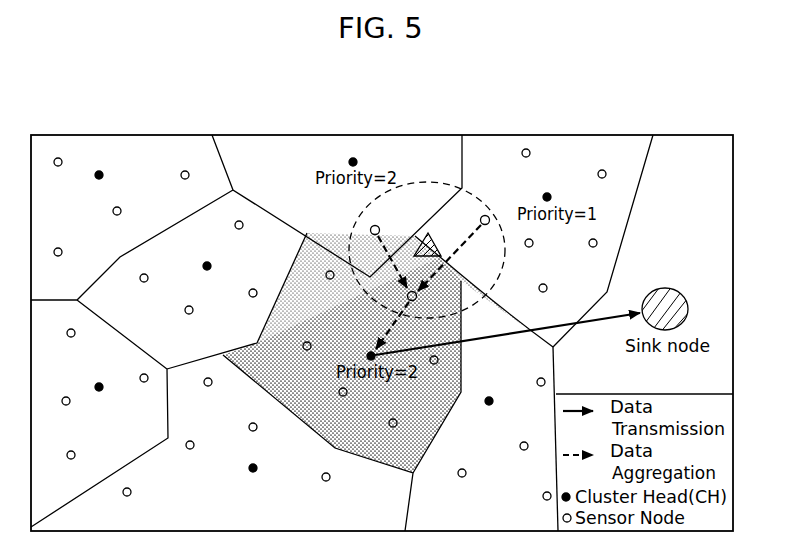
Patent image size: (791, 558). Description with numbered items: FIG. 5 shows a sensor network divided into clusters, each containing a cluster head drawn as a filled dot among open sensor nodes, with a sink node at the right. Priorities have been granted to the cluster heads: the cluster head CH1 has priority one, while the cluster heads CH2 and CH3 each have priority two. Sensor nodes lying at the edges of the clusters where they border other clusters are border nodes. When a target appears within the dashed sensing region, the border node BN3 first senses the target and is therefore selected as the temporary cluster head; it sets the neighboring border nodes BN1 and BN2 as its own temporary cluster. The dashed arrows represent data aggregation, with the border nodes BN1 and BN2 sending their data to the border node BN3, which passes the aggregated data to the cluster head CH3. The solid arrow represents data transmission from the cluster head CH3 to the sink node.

The cluster head CH1 is at (548, 192).
The cluster head CH2 is at (358, 161).
The cluster head CH3 is at (369, 351).
The border node BN1 is at (486, 215).
The border node BN2 is at (377, 225).
The border node BN3 is at (413, 301).
The element target is at (448, 250).